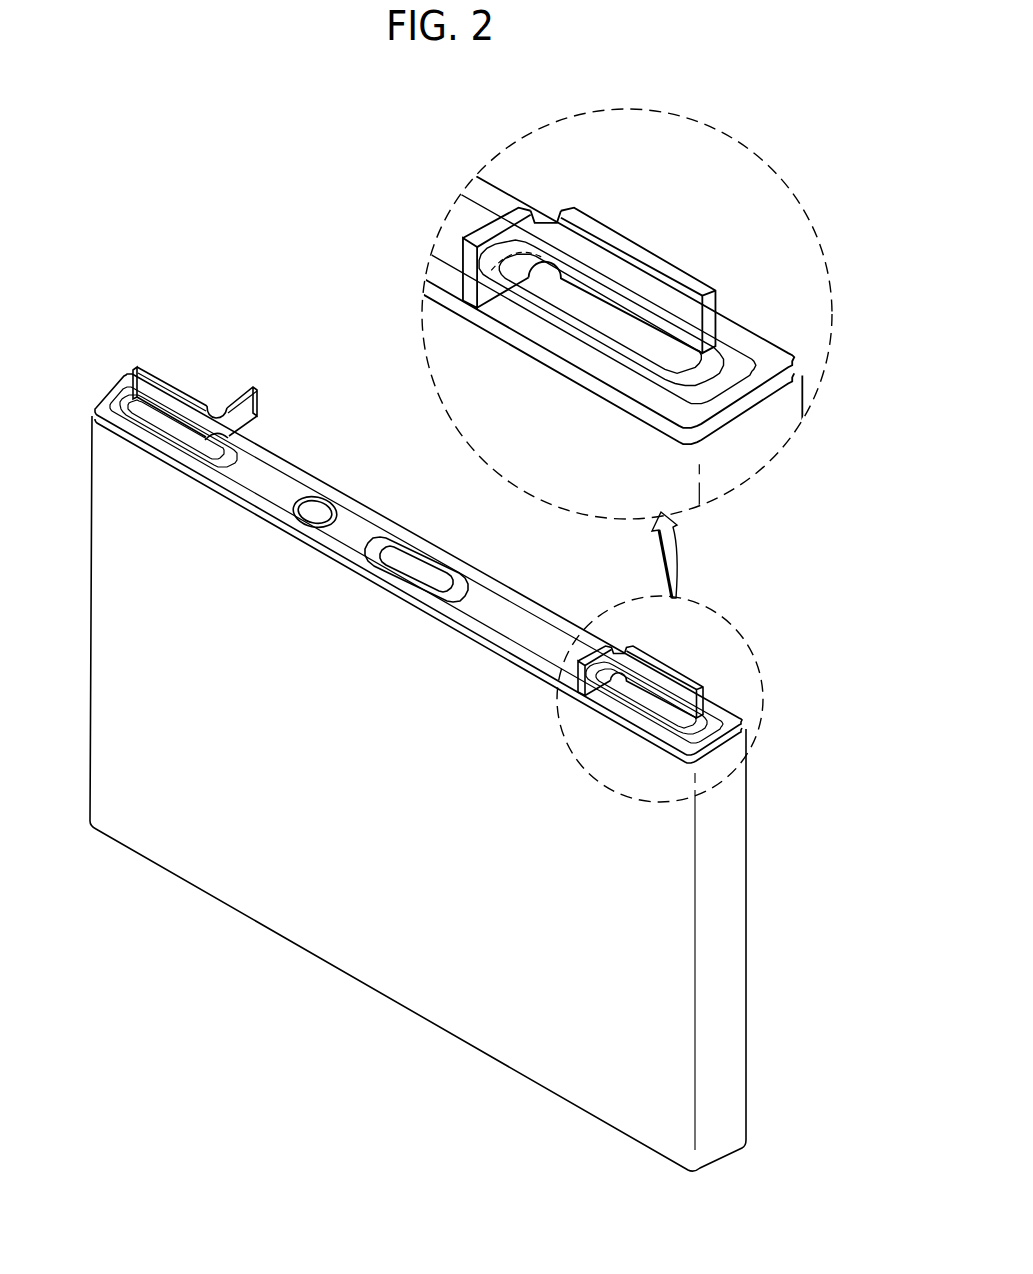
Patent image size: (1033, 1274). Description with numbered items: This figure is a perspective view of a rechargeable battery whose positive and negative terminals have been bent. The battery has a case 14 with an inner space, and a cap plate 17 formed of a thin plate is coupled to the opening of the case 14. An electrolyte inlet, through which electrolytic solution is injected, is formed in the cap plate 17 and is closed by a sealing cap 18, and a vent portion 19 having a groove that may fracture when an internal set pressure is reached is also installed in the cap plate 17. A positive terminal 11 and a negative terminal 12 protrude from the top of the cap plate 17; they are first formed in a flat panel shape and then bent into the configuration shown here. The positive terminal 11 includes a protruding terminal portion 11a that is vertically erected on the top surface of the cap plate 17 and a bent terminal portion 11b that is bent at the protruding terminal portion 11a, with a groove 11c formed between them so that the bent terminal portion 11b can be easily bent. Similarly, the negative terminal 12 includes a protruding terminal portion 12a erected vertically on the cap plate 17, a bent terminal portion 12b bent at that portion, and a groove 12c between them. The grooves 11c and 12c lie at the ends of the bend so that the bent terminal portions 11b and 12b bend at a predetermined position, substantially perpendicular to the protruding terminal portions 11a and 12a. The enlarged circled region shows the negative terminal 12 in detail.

The positive terminal 11 is at (195, 376).
The protruding terminal portion 11a is at (146, 389).
The bent terminal portion 11b is at (257, 413).
The groove 11c is at (218, 404).
The negative terminal 12 is at (576, 220).
The protruding terminal portion 12a is at (600, 213).
The bent terminal portion 12b is at (480, 222).
The groove 12c is at (545, 218).
The case 14 is at (378, 958).
The cap plate 17 is at (378, 512).
The sealing cap 18 is at (316, 508).
The vent portion 19 is at (426, 565).